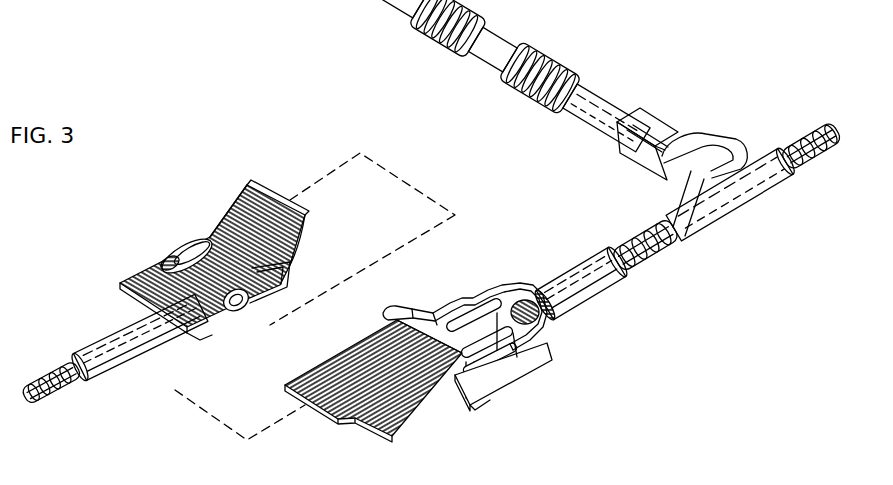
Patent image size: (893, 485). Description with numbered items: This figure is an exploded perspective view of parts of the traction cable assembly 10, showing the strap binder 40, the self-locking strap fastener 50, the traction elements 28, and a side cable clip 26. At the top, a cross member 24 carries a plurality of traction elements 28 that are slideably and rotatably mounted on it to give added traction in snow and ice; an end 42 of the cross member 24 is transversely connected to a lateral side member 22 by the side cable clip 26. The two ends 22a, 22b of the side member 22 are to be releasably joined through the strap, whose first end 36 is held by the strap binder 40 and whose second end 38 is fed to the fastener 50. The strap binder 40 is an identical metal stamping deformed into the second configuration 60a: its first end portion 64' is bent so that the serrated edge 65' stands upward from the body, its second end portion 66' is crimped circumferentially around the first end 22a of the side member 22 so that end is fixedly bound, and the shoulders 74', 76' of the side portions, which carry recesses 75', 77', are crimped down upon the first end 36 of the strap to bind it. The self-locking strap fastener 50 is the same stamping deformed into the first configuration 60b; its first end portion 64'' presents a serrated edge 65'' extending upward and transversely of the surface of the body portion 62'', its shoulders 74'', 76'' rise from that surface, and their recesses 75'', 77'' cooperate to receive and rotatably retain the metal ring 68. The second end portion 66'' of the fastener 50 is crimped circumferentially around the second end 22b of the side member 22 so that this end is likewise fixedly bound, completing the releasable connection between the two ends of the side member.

The electrical connector assembly 10 is at (514, 9).
The lateral side member 22 is at (58, 397).
The first end of side member 22a is at (103, 328).
The second end of side member 22b is at (534, 290).
The cross member 24 is at (594, 100).
The side cable clip 26 is at (633, 165).
The traction element 28 is at (548, 42).
The first end of strap 36 is at (140, 278).
The second end of strap 38 is at (405, 405).
The strap binder 40 is at (163, 432).
The end of cross member 42 is at (710, 143).
The self-locking strap fastener 50 is at (571, 324).
The second configuration 60a is at (212, 338).
The first configuration 60b is at (563, 350).
The body portion 62'' is at (479, 285).
The first end portion 64' is at (223, 191).
The first end portion 64'' is at (496, 410).
The serrated edge 65' is at (271, 193).
The serrated edge 65'' is at (391, 325).
The second end portion 66' is at (138, 366).
The second end portion 66'' is at (604, 289).
The metal ring 68 is at (393, 312).
The shoulder 74' is at (183, 201).
The shoulder 74'' is at (526, 386).
The recess 75' is at (132, 240).
The recess 75'' is at (527, 377).
The shoulder 76' is at (285, 280).
The shoulder 76'' is at (473, 289).
The recess 77' is at (275, 308).
The recess 77'' is at (486, 313).